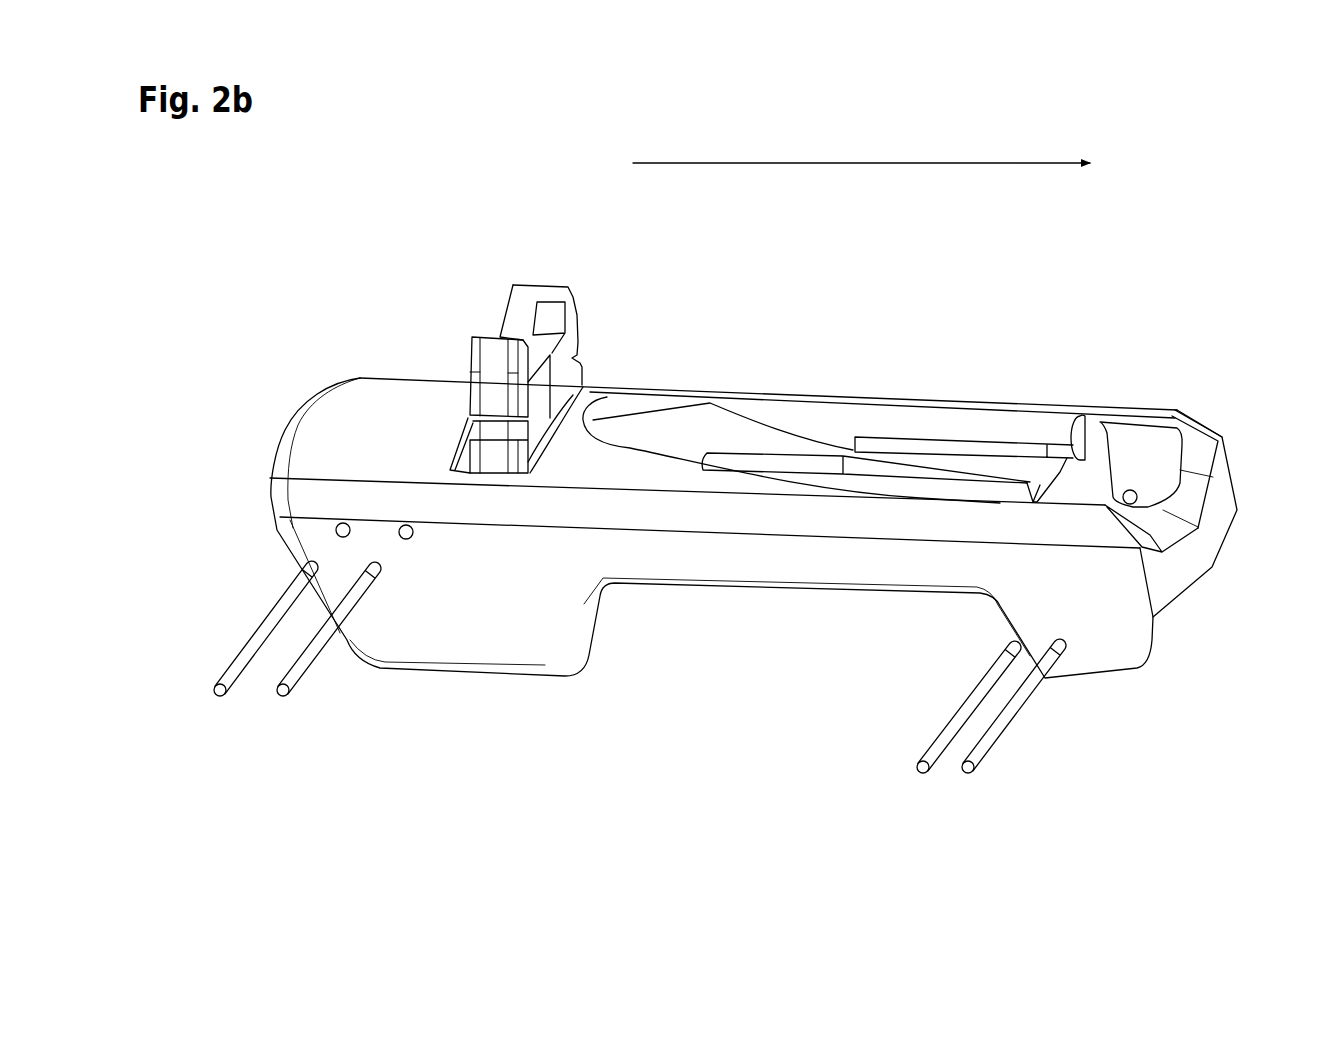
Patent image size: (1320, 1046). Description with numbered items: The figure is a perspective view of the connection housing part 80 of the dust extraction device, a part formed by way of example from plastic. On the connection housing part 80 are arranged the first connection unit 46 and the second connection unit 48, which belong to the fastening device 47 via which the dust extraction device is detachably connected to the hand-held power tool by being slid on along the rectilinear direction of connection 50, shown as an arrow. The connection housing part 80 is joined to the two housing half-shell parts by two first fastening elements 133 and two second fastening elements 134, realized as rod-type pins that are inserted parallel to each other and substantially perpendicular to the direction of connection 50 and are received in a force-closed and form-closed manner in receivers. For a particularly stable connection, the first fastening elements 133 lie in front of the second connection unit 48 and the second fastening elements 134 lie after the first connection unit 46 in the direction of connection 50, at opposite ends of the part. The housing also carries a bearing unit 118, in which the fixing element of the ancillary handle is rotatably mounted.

The first connection unit 46 is at (1014, 364).
The fastening device 47 is at (815, 273).
The second connection unit 48 is at (538, 271).
The bearing unit 118 is at (592, 314).
The connection housing part 80 is at (1210, 433).
The direction of connection 50 is at (725, 162).
The first fastening elements 133 is at (270, 735).
The second fastening elements 134 is at (975, 815).